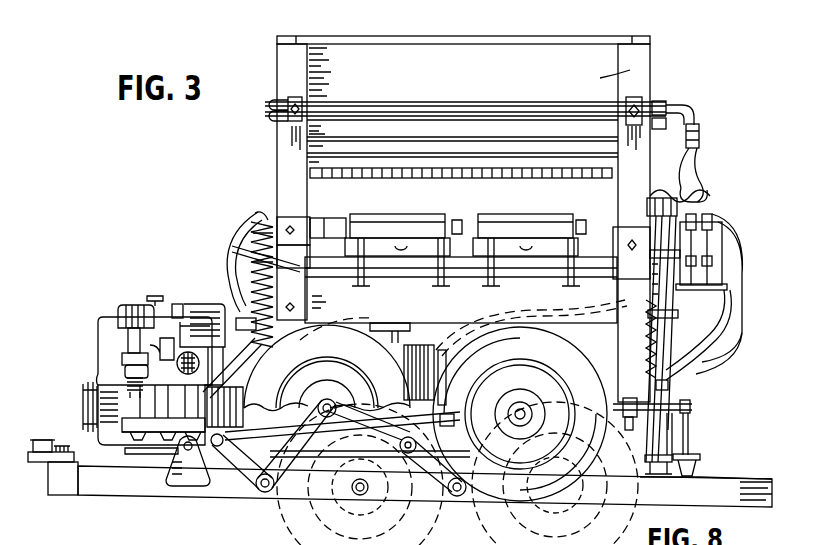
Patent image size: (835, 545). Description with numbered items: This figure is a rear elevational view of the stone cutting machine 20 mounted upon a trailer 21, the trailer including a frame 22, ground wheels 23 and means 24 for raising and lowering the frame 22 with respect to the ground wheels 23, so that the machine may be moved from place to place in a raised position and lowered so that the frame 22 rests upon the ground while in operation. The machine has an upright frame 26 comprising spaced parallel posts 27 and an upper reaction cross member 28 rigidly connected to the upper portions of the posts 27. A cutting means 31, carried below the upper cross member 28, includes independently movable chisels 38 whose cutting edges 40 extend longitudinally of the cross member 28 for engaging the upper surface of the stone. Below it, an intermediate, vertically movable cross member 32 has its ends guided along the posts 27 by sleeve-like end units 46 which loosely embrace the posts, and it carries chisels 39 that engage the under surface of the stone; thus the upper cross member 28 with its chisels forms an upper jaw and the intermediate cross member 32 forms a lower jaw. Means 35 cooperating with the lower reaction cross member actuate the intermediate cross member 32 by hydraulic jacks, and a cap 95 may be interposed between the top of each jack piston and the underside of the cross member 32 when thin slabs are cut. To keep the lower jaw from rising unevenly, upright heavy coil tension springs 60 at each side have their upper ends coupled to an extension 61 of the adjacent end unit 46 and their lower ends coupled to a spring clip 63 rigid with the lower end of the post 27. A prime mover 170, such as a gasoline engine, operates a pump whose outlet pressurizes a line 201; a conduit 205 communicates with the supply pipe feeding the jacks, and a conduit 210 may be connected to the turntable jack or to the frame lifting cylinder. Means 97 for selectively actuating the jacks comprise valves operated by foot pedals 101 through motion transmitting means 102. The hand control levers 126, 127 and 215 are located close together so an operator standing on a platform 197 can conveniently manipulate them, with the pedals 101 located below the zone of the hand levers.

The stone cutting machine 20 is at (650, 44).
The trailer 21 is at (806, 473).
The frame 22 is at (110, 484).
The ground wheels 23 is at (594, 450).
The means for raising and lowering the frame 24 is at (242, 492).
The upright frame 26 is at (277, 56).
The posts 27 is at (646, 92).
The upper reaction cross member 28 is at (640, 72).
The cutting means 31 is at (318, 179).
The intermediate cross member 32 is at (348, 304).
The means for actuating the intermediate cross member 35 is at (480, 328).
The chisels 38 is at (459, 172).
The chisels 39 is at (328, 218).
The cutting edges 40 is at (350, 218).
The sleeve-like end units 46 is at (282, 228).
The coil tension springs 60 is at (250, 317).
The extension 61 is at (258, 227).
The spring clip 63 is at (670, 384).
The cap 95 is at (382, 320).
The means for selectively actuating the jacks 97 is at (688, 460).
The pedal 101 is at (686, 472).
The motion transmitting means 102 is at (694, 412).
The hand lever 126 is at (700, 210).
The hand lever 127 is at (718, 220).
The prime mover 170 is at (100, 324).
The platform 197 is at (728, 480).
The line 201 is at (708, 322).
The conduit 205 is at (742, 278).
The conduit 210 is at (600, 372).
The hand lever 215 is at (618, 250).